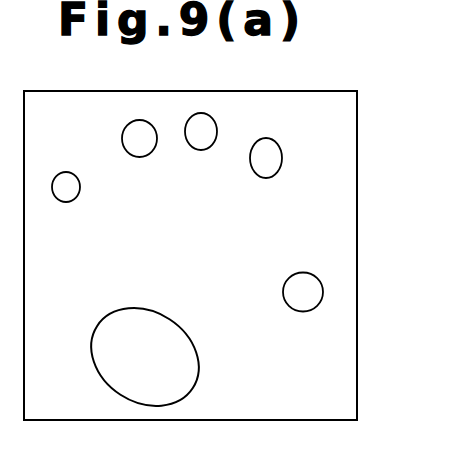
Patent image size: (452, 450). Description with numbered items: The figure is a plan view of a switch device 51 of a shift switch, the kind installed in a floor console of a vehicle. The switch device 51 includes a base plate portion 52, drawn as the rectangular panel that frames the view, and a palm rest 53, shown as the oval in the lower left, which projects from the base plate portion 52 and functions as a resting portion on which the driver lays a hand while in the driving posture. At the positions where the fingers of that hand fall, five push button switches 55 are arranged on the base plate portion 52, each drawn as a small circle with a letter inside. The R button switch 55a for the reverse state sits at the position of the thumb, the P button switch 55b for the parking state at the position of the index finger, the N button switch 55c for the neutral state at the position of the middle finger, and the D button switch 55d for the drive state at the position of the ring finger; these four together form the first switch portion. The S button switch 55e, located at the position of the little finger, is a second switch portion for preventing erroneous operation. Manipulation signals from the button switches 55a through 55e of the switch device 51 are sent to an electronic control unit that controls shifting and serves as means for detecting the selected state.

The switch device 51 is at (370, 318).
The base plate portion 52 is at (348, 386).
The palm rest 53 is at (178, 361).
The push button switches 55 is at (331, 180).
The R button switch 55a is at (293, 281).
The P button switch 55b is at (267, 141).
The N button switch 55c is at (216, 131).
The D button switch 55d is at (122, 137).
The S button switch 55e is at (56, 197).